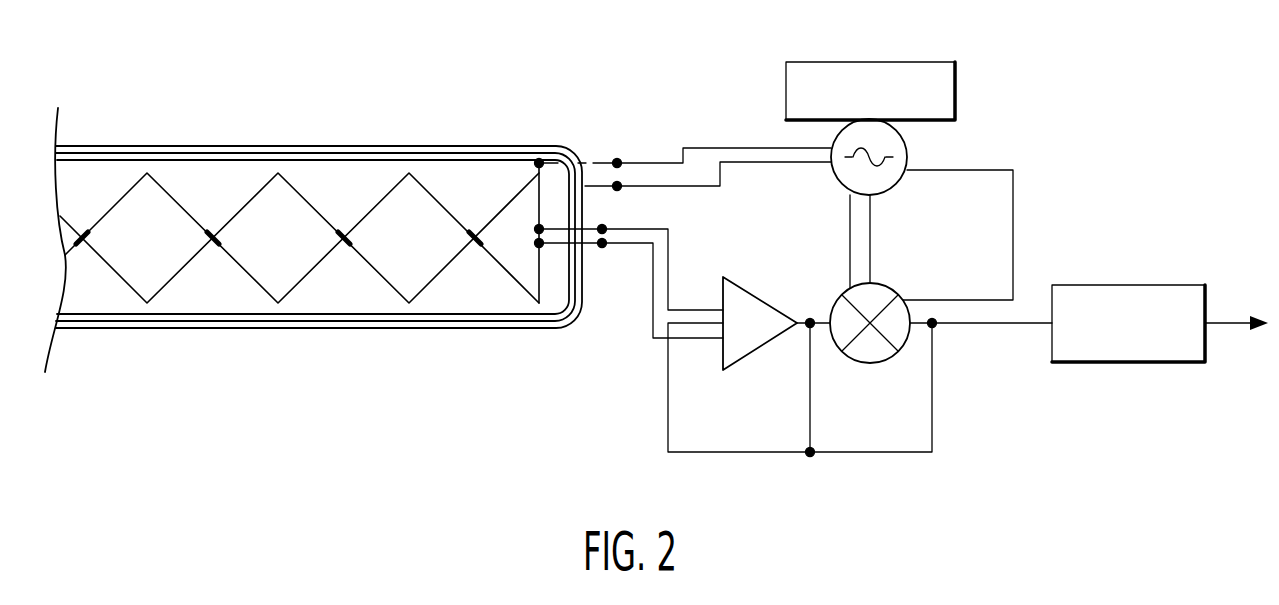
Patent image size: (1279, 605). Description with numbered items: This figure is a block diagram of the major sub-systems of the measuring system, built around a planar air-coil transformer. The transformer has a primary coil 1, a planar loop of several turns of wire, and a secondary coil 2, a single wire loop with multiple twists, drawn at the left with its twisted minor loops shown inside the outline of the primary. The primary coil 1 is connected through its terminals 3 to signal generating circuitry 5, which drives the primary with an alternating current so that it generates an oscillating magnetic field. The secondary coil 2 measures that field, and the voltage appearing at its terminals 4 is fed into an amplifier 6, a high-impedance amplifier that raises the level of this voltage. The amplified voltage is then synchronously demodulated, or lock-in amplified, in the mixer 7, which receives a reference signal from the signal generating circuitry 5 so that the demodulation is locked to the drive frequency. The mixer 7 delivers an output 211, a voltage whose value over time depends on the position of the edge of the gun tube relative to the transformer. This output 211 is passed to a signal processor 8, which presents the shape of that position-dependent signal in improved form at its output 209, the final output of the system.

The primary coil 1 is at (149, 122).
The secondary coil 2 is at (354, 284).
The terminals of the primary coil 3 is at (602, 149).
The terminals of the secondary coil 4 is at (610, 272).
The signal generating circuitry 5 is at (818, 62).
The amplifier 6 is at (752, 356).
The mixer 7 is at (870, 363).
The signal processor 8 is at (1138, 362).
The signal processor output 209 is at (1259, 327).
The mixer output 211 is at (958, 326).